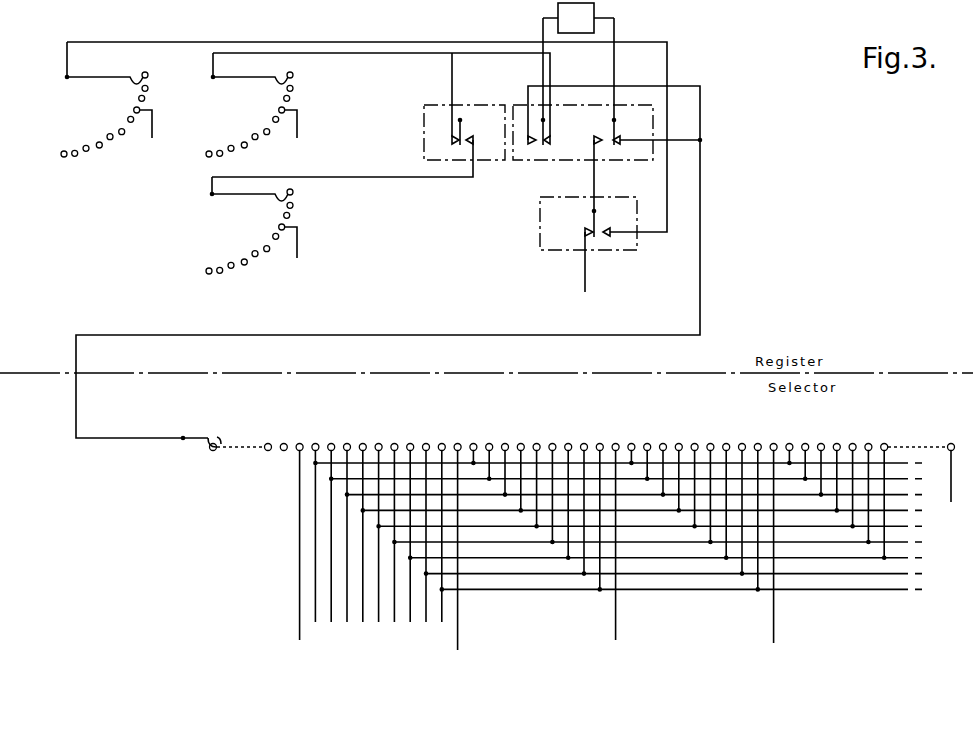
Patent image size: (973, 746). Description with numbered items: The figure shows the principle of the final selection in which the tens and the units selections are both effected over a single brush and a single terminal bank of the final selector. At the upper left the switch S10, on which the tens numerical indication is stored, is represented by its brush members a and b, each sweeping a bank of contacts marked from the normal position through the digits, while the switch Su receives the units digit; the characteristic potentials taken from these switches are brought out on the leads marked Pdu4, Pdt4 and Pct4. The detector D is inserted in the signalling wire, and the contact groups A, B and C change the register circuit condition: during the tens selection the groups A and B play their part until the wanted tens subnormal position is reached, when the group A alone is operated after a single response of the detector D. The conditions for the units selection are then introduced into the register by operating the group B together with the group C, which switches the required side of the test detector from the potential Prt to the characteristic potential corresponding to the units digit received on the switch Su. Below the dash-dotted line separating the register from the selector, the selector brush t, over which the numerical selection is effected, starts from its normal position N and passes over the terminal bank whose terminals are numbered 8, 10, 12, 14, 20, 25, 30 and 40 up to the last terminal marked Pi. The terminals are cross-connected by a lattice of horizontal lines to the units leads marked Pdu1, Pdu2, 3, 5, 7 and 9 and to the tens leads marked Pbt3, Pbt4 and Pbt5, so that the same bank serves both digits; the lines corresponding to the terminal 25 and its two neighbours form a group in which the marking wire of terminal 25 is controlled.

The units switch Su is at (367, 128).
The tens switch S10 is at (381, 80).
The brush member a is at (109, 120).
The brush member b is at (339, 214).
The units dial output 4 Pdu4 is at (153, 138).
The tens dial output 4 Pdt4 is at (257, 120).
The hundreds dial output 4 Pct4 is at (291, 255).
The contact group A is at (464, 132).
The contact group B is at (606, 127).
The contact group C is at (588, 223).
The detector D is at (578, 18).
The Prt potential Prt is at (585, 268).
The selector brush t is at (191, 430).
The selector neutral position N is at (214, 436).
The selector contact 8 is at (268, 440).
The selector contact 10 is at (300, 440).
The selector contact 12 is at (331, 440).
The selector contact 14 is at (367, 440).
The selector contact 20 is at (461, 440).
The terminal 25 is at (536, 440).
The selector contact 30 is at (615, 440).
The selector contact 40 is at (773, 440).
The selector end output Pi is at (921, 483).
The units output 1 Pdu1 is at (308, 553).
The units output 2 Pdu2 is at (325, 553).
The units output 3 is at (346, 544).
The units output 5 is at (377, 544).
The units output 7 is at (409, 544).
The units output 9 is at (441, 544).
The tens output 3 Pbt3 is at (459, 560).
The tens output 4 Pbt4 is at (614, 560).
The tens output 5 Pbt5 is at (770, 560).